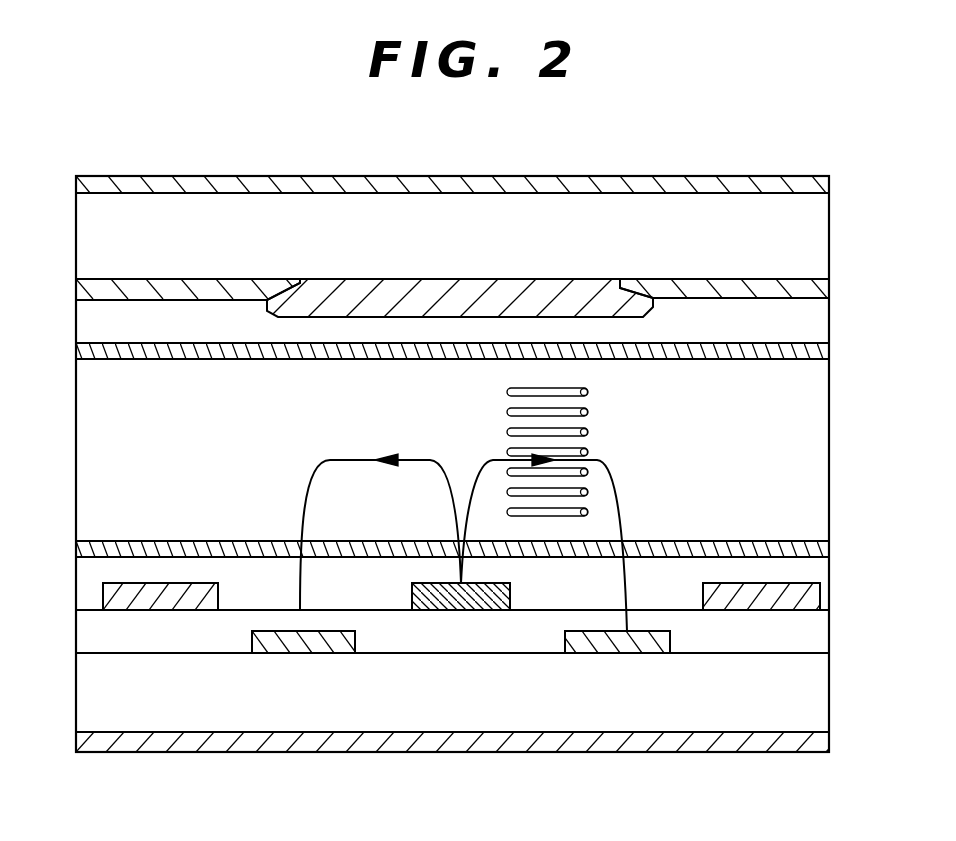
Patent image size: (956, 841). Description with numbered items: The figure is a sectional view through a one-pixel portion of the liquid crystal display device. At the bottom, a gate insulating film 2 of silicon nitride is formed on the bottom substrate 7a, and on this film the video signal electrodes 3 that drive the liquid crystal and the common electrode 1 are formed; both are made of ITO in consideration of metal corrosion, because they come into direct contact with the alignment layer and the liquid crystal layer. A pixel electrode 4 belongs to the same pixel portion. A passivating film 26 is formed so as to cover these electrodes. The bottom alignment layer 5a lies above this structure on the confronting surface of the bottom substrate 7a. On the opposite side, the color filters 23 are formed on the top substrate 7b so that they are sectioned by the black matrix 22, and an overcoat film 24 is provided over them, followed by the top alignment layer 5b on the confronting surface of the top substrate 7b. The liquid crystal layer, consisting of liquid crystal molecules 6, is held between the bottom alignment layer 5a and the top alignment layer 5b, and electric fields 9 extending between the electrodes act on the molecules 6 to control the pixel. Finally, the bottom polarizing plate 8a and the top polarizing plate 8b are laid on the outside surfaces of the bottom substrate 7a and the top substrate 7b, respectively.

The common electrode 1 is at (305, 640).
The gate insulating film 2 is at (215, 637).
The video signal electrodes 3 is at (140, 600).
The pixel electrode 4 is at (452, 612).
The bottom alignment layer 5a is at (200, 540).
The top alignment layer 5b is at (325, 360).
The liquid crystal molecules 6 is at (588, 432).
The bottom substrate 7a is at (533, 698).
The top substrate 7b is at (446, 228).
The bottom polarizing plate 8a is at (705, 745).
The top polarizing plate 8b is at (344, 180).
The electric fields 9 is at (620, 502).
The black matrix 22 is at (200, 290).
The color filters 23 is at (563, 295).
The overcoat film 24 is at (445, 333).
The passivating film 26 is at (758, 563).